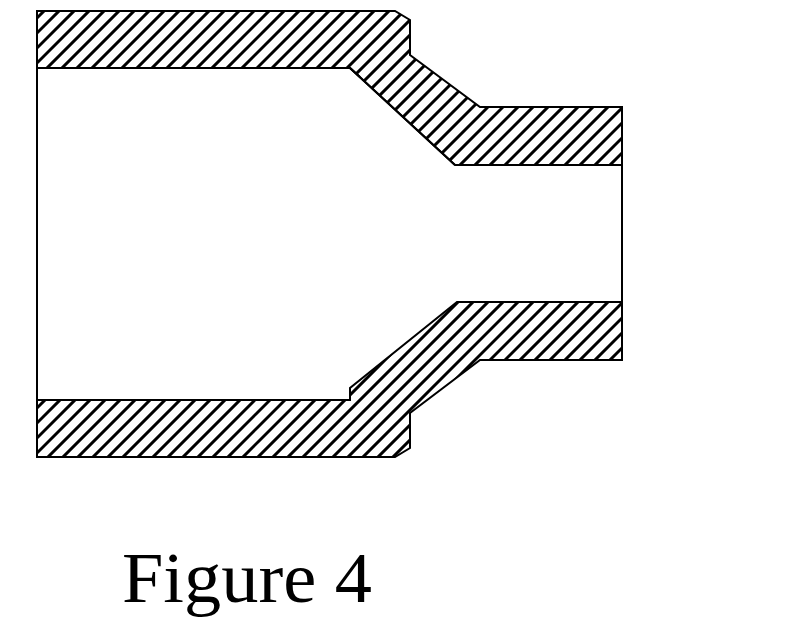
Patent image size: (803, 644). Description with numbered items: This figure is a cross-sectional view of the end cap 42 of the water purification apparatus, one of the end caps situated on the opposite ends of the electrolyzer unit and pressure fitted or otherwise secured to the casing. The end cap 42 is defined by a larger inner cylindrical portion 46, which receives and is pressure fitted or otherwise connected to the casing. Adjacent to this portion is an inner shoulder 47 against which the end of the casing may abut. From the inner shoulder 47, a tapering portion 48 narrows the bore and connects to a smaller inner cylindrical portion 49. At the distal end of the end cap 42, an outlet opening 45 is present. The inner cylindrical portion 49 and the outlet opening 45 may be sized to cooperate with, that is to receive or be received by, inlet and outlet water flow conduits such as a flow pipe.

The end cap 42 is at (535, 361).
The outlet opening 45 is at (622, 236).
The inner cylindrical portion 46 is at (130, 66).
The inner shoulder 47 is at (349, 76).
The tapering portion 48 is at (406, 133).
The inner cylindrical portion 49 is at (528, 167).